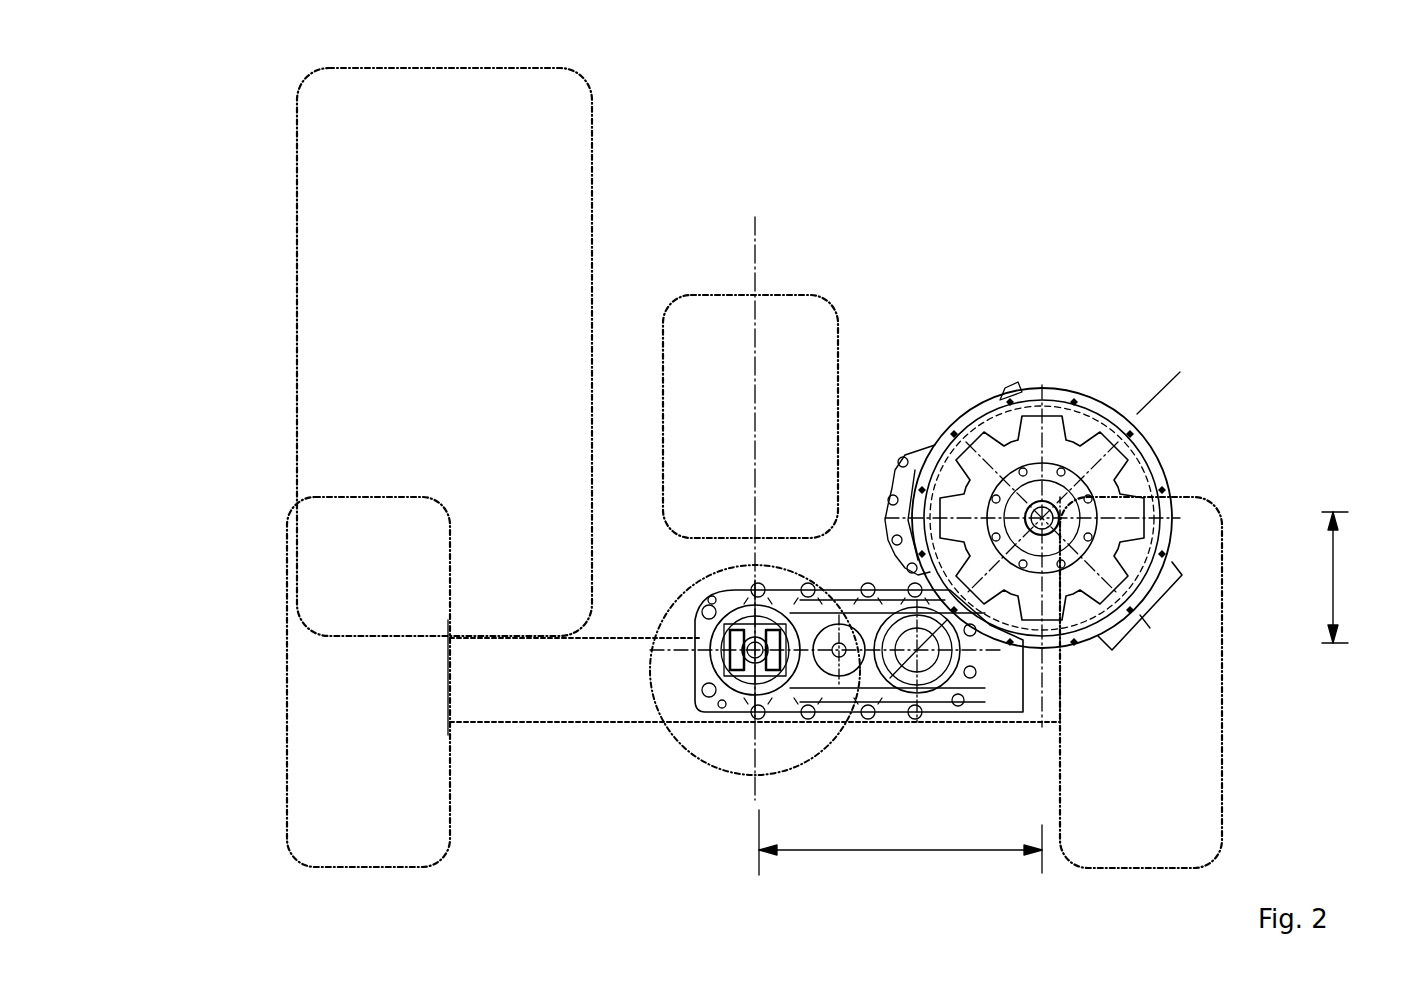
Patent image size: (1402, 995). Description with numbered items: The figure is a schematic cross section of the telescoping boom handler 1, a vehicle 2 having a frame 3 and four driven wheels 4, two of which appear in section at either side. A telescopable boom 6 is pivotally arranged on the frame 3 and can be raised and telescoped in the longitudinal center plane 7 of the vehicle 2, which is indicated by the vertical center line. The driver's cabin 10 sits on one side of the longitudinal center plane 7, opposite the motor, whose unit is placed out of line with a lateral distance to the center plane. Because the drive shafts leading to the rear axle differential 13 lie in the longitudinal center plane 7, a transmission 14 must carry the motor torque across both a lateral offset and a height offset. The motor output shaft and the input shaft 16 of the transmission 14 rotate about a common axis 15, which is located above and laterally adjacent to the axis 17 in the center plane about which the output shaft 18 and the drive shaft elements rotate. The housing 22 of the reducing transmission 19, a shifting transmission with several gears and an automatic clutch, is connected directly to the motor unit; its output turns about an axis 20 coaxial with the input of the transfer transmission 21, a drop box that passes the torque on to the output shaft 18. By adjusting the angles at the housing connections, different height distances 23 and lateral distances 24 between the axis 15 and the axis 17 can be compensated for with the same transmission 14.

The telescoping boom handler 1 is at (214, 113).
The vehicle 2 is at (525, 722).
The frame 3 is at (580, 700).
The driven wheels 4 is at (312, 755).
The telescopable boom 6 is at (785, 312).
The longitudinal center plane 7 is at (755, 262).
The driver's cabin 10 is at (316, 250).
The rear axle differential 13 is at (693, 757).
The transmission 14 is at (1172, 443).
The axis 15 is at (1062, 512).
The input shaft 16 is at (1042, 518).
The axis 17 is at (783, 670).
The output shaft 18 is at (738, 668).
The reducing transmission 19 is at (1080, 423).
The axis 20 is at (917, 650).
The transfer transmission 21 is at (845, 600).
The housing 22 is at (1125, 603).
The height distance 23 is at (1335, 603).
The lateral distance 24 is at (888, 850).